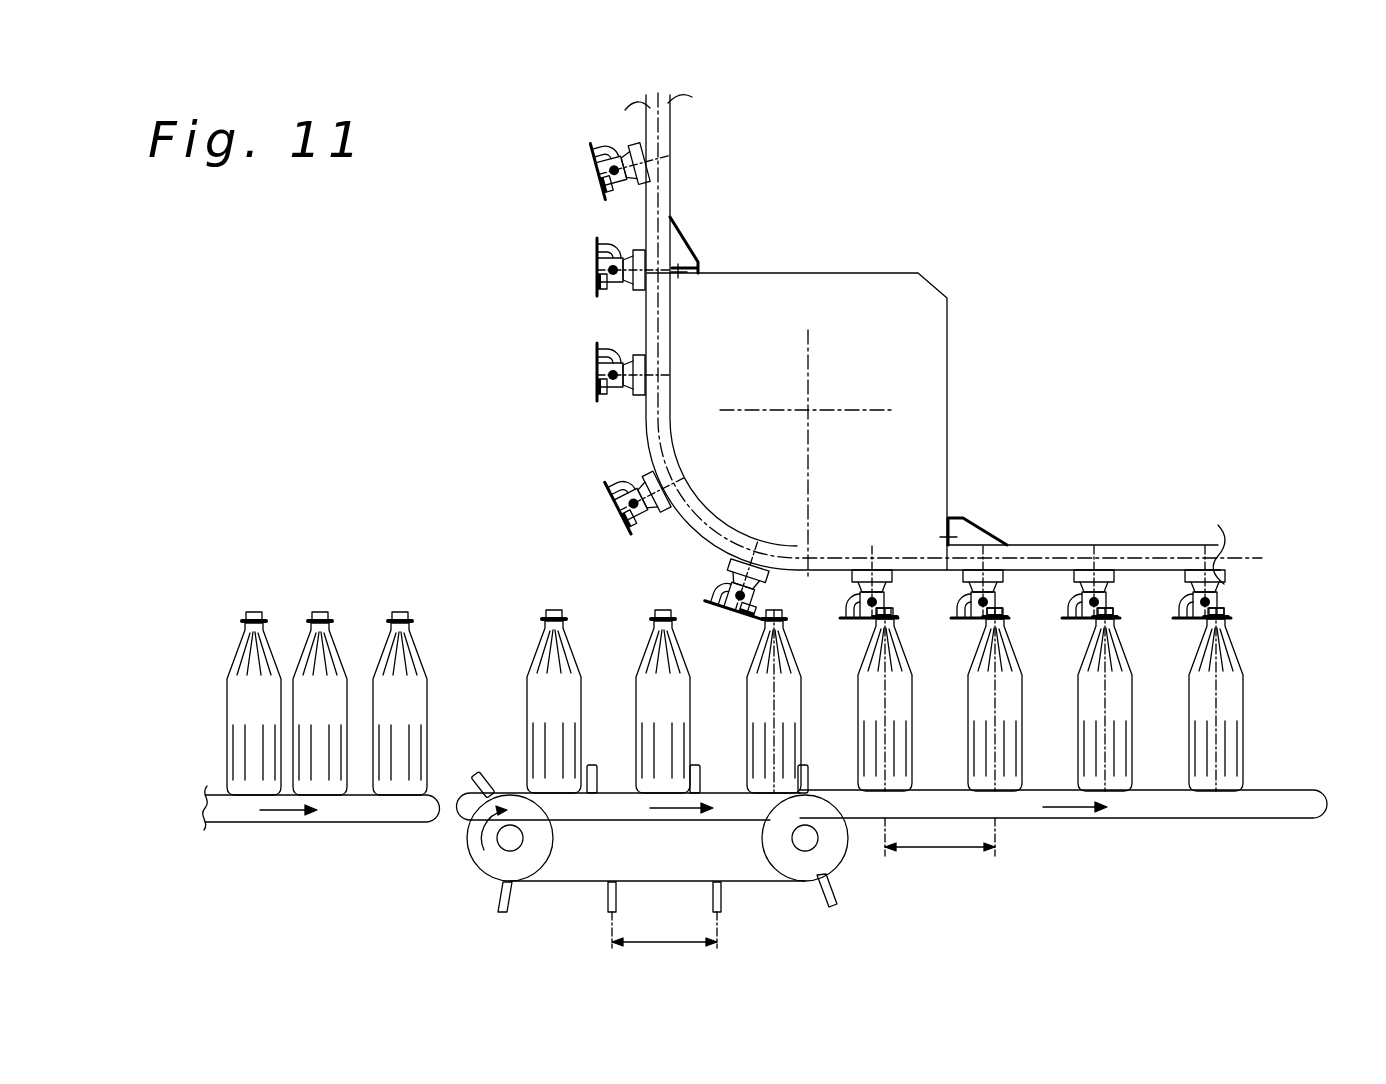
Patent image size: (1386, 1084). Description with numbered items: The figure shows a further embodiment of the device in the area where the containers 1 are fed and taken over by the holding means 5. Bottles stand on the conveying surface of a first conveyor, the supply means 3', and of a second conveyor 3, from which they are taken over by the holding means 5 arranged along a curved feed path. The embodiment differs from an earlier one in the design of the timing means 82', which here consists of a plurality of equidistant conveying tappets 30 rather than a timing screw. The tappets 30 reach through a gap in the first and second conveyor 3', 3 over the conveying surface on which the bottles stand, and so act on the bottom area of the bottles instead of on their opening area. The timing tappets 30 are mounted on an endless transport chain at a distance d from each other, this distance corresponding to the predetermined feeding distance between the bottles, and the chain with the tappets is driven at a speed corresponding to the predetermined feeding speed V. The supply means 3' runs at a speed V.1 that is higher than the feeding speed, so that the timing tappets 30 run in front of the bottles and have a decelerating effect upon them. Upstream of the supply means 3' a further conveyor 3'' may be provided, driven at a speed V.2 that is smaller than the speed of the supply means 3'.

The container 1 is at (242, 700).
The second conveyor 3 is at (1063, 848).
The supply means (first conveyor) 3' is at (653, 852).
The further conveyor 3'' is at (320, 850).
The holding means 5 is at (595, 390).
The conveying tappets 30 is at (478, 768).
The timing means 82' is at (457, 853).
The feeding speed V is at (473, 840).
The speed of the supply means V.1 is at (660, 808).
The speed of the further conveyor V.2 is at (280, 812).
The distance between tappets d is at (803, 883).